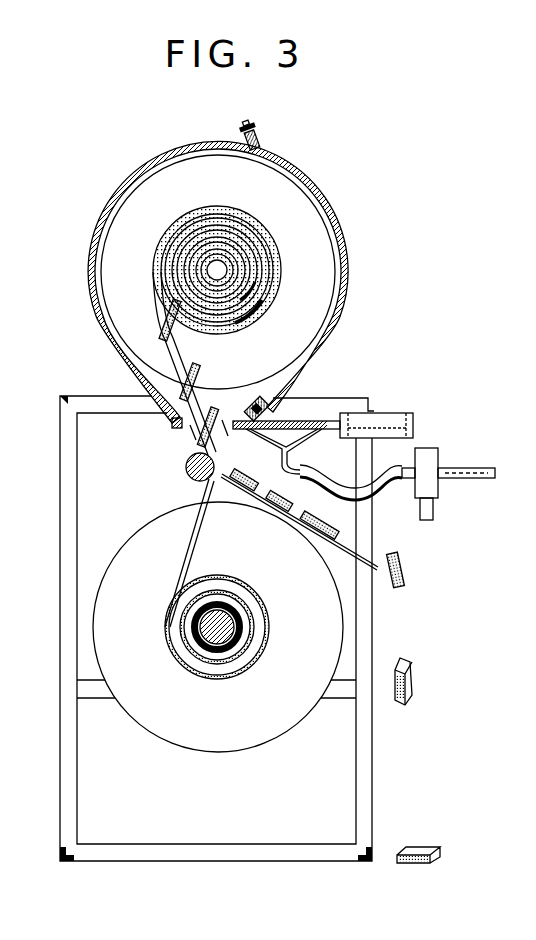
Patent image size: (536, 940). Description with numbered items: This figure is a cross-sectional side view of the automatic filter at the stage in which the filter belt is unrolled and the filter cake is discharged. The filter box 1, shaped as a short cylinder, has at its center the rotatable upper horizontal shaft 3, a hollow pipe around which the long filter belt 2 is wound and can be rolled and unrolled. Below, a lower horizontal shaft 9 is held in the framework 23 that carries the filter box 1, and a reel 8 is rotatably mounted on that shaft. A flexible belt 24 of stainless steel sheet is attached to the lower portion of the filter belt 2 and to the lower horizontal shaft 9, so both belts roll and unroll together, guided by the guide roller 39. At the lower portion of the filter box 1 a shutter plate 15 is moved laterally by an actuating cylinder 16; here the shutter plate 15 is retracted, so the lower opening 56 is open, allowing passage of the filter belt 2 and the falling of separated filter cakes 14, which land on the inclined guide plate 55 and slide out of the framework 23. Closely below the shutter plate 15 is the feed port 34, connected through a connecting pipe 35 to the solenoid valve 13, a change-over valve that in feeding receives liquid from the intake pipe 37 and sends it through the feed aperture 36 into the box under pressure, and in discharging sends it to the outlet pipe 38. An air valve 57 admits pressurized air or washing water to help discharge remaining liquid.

The filter box 1 is at (163, 160).
The filter belt 2 is at (165, 232).
The upper horizontal shaft 3 is at (217, 258).
The reel 8 is at (232, 742).
The lower horizontal shaft 9 is at (248, 620).
The solenoid valve 13 is at (428, 448).
The filter cakes 14 is at (256, 230).
The shutter plate 15 is at (318, 400).
The actuating cylinder 16 is at (394, 412).
The framework 23 is at (62, 484).
The flexible belt 24 is at (238, 645).
The feed port 34 is at (296, 444).
The connecting pipe 35 is at (390, 488).
The feed aperture 36 is at (250, 426).
The intake pipe 37 is at (480, 478).
The outlet pipe 38 is at (433, 512).
The guide roller 39 is at (186, 470).
The inclined guide plate 55 is at (312, 540).
The lower opening 56 is at (223, 425).
The air valve 57 is at (252, 136).